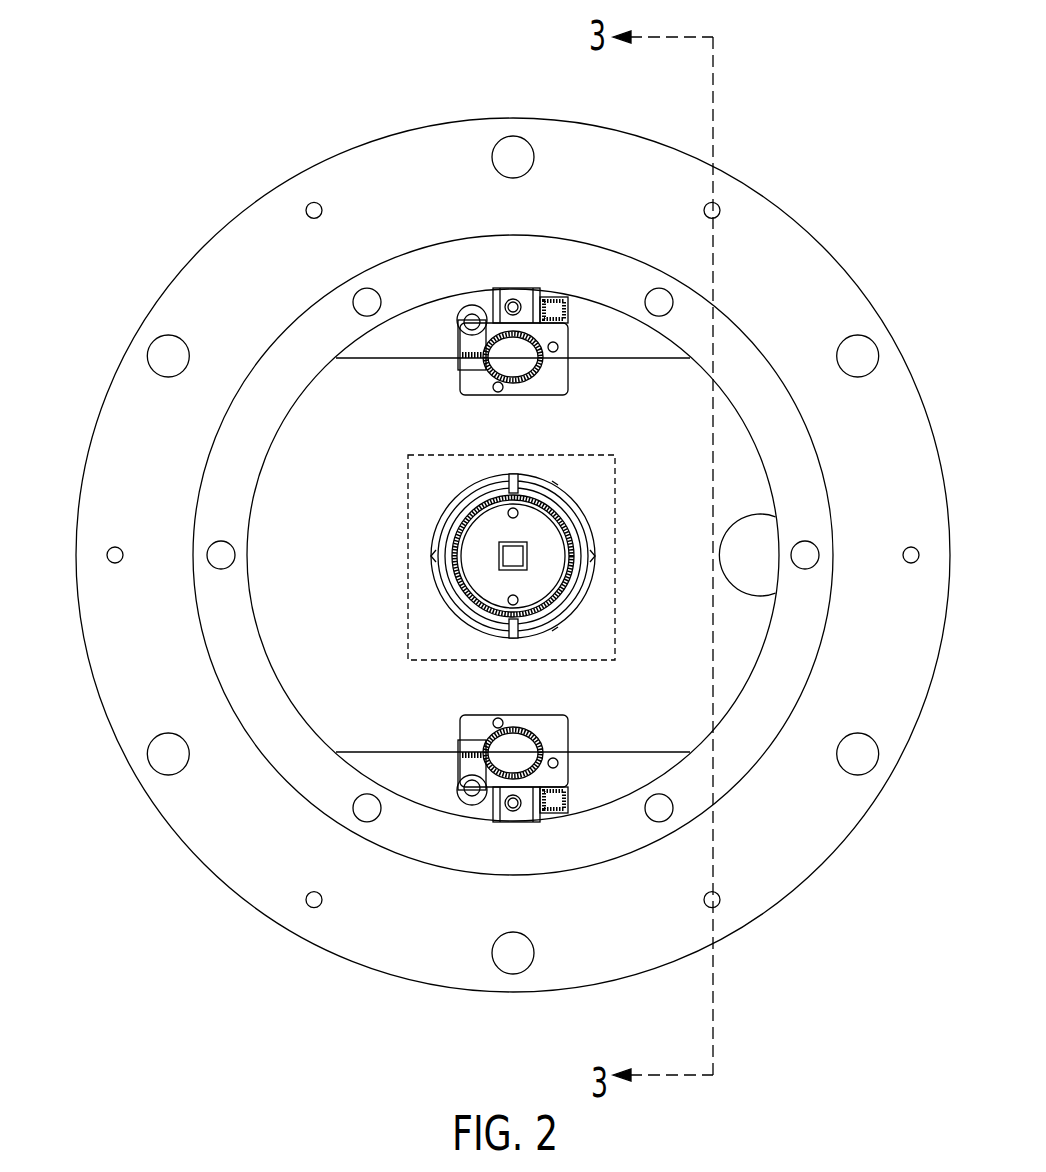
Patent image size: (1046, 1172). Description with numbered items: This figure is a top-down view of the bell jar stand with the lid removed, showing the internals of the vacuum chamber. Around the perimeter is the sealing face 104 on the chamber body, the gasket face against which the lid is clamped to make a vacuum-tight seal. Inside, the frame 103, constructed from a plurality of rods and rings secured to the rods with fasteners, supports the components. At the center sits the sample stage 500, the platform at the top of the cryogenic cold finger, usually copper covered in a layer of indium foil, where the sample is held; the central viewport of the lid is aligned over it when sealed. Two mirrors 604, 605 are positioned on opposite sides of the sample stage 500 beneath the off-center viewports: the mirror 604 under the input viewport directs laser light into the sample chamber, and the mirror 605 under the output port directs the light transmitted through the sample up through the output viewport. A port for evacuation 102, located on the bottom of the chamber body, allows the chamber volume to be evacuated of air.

The port for evacuation 102 is at (760, 563).
The frame 103 is at (222, 452).
The sealing face 104 is at (127, 700).
The sample stage 500 is at (406, 486).
The mirror 604 is at (548, 373).
The mirror 605 is at (562, 733).